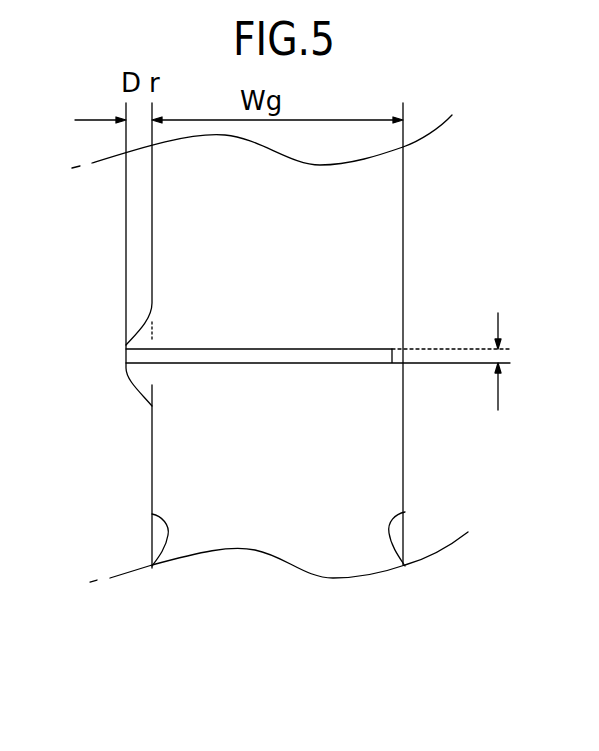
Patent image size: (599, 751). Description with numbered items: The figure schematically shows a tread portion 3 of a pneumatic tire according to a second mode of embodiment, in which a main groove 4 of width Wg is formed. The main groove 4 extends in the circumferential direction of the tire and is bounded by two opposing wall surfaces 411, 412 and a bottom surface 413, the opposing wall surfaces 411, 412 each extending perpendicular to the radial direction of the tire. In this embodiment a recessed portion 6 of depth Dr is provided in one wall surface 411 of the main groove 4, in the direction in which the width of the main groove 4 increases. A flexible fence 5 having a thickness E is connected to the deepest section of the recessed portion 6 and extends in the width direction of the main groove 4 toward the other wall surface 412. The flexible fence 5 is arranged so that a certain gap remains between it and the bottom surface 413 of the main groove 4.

The tread portion 3 is at (456, 284).
The main groove 4 is at (297, 530).
The flexible fence 5 is at (335, 367).
The recessed portion 6 is at (142, 340).
The wall surface 411 is at (158, 558).
The wall surface 412 is at (397, 560).
The bottom surface 413 is at (292, 476).